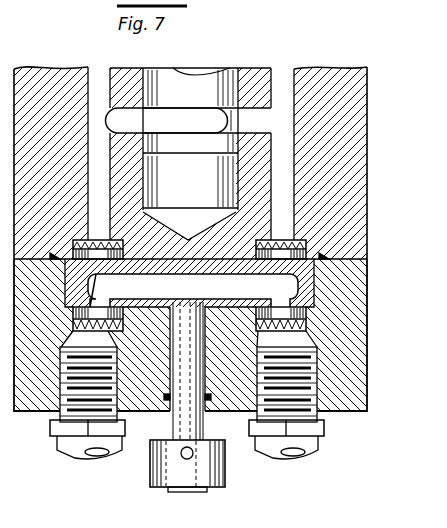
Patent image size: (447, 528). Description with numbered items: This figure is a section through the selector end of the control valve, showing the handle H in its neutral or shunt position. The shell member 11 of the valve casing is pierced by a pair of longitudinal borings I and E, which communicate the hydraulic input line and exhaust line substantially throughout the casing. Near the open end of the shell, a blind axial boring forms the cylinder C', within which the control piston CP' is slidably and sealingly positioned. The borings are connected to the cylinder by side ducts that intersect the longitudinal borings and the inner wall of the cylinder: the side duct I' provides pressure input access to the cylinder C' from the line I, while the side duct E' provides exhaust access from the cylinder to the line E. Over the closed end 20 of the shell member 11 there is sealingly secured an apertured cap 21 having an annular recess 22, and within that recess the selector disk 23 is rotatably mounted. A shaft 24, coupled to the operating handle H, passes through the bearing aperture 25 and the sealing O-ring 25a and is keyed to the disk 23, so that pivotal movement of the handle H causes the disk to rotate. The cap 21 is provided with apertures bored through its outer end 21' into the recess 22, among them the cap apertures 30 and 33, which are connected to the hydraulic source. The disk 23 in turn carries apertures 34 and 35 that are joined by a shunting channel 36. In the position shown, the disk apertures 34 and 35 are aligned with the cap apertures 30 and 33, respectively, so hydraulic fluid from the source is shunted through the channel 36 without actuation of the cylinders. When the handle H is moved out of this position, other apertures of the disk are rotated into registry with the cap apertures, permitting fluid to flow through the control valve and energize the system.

The shell member 11 is at (58, 64).
The input line boring I is at (80, 287).
The exhaust line boring E is at (299, 287).
The side duct I' is at (118, 86).
The side duct E' is at (254, 85).
The control piston CP' is at (171, 125).
The cylinder C' is at (191, 216).
The closed end 20 is at (45, 260).
The apertured cap 21 is at (189, 359).
The outer end of cap 21' is at (312, 395).
The annular recess 22 is at (67, 289).
The selector disk 23 is at (312, 280).
The shaft 24 is at (183, 415).
The bearing aperture 25 is at (170, 345).
The sealing O-ring 25a is at (208, 396).
The cap aperture 30 is at (62, 353).
The cap aperture 33 is at (312, 333).
The disk aperture 34 is at (73, 318).
The disk aperture 35 is at (256, 318).
The shunting channel 36 is at (172, 286).
The operating handle H is at (177, 467).